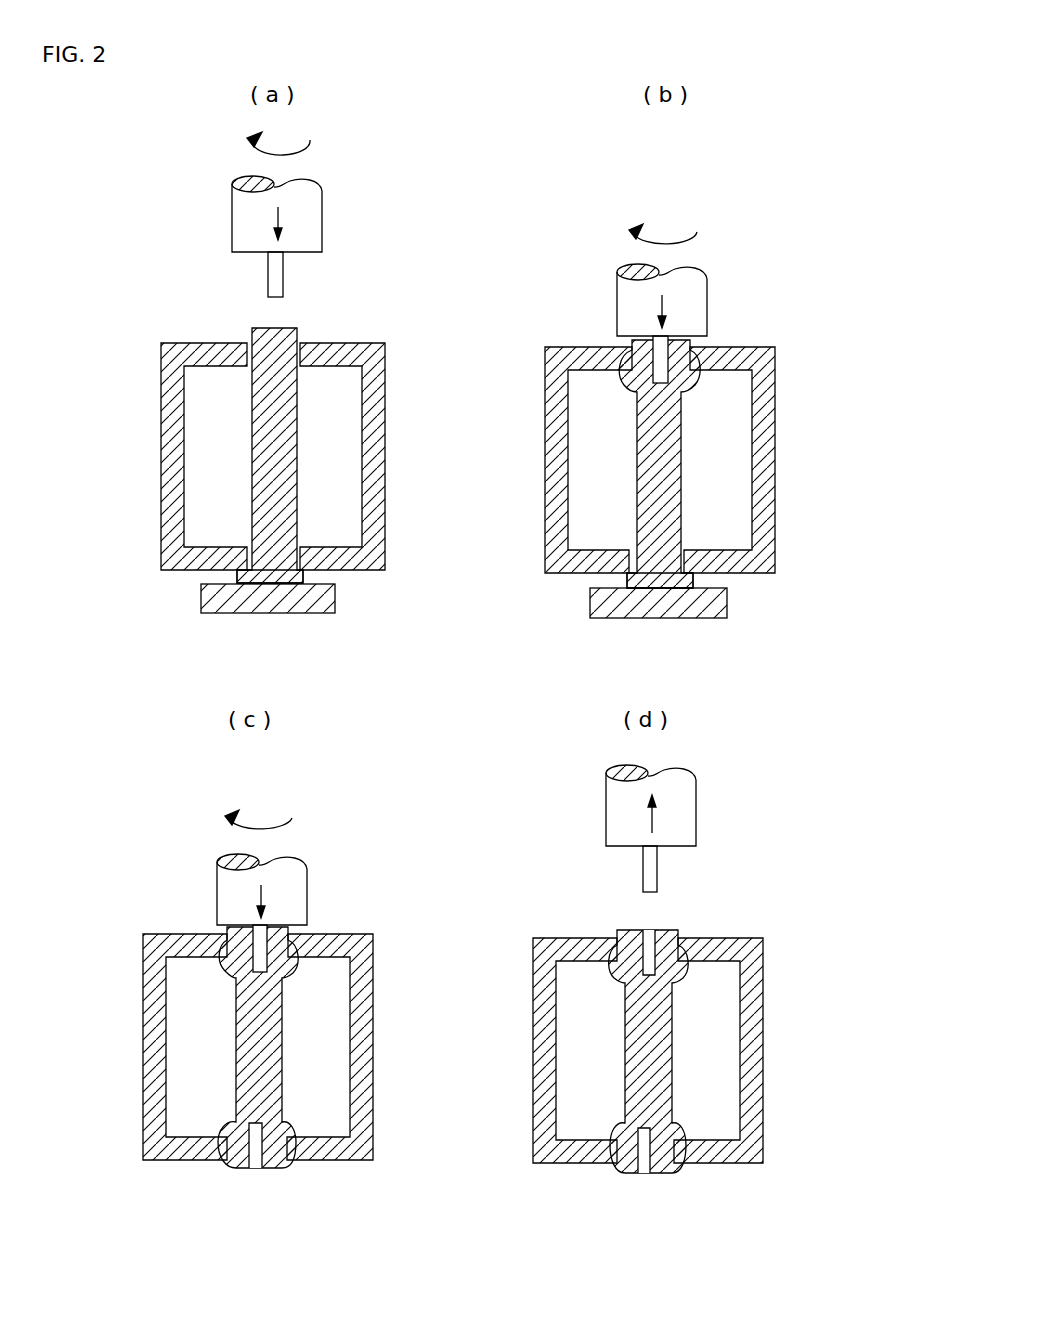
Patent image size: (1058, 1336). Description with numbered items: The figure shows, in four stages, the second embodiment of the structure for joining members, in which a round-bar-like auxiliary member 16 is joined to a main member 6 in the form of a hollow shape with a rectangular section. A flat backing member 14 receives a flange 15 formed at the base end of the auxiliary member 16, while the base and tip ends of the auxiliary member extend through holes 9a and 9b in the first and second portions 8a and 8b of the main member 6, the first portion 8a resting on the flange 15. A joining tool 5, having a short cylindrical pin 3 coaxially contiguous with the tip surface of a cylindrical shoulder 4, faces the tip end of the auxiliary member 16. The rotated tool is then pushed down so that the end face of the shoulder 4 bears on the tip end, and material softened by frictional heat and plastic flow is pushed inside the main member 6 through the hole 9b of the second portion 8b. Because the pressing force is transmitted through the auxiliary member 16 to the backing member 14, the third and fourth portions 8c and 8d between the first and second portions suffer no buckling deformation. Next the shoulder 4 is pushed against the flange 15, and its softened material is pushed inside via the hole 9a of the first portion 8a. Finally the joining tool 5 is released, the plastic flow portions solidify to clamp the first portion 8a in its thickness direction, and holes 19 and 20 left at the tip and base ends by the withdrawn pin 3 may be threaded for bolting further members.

The pin 3 is at (273, 282).
The shoulder 4 is at (242, 209).
The joining tool 5 is at (330, 190).
The main member 6 is at (395, 338).
The first portion 8a is at (362, 562).
The second portion 8b is at (350, 353).
The third portion 8c is at (377, 443).
The fourth portion 8d is at (172, 441).
The hole of first portion 9a is at (294, 557).
The hole of second portion 9b is at (292, 357).
The backing member 14 is at (297, 603).
The flange 15 is at (247, 579).
The auxiliary member 16 is at (260, 488).
The hole of tip end 19 is at (255, 1162).
The hole of base end 20 is at (650, 929).